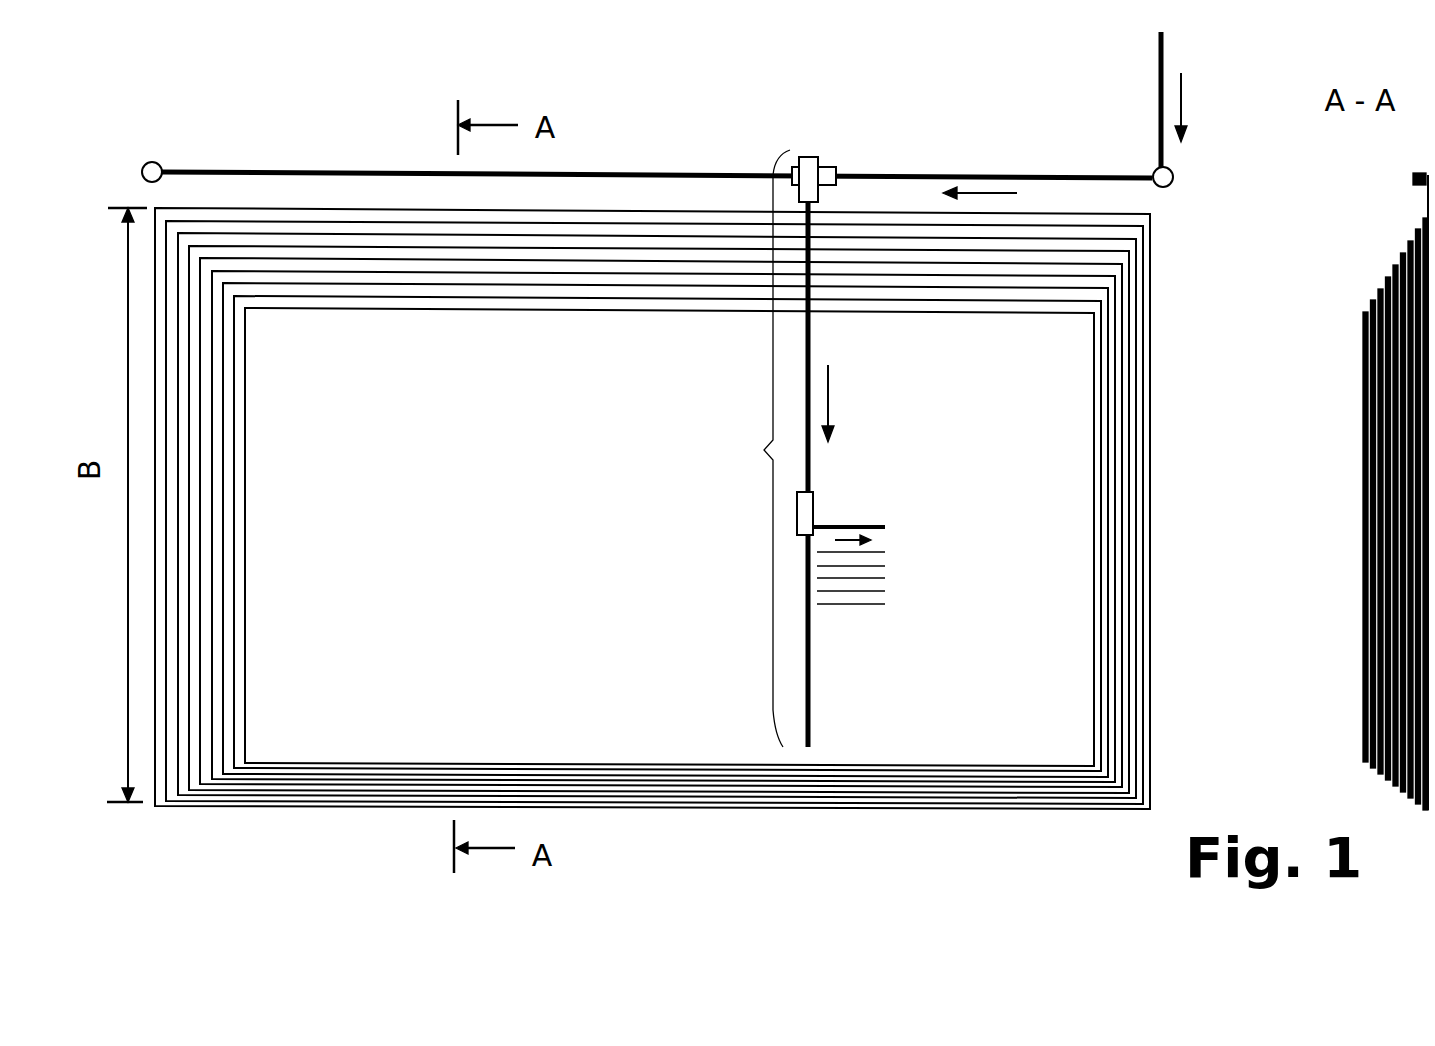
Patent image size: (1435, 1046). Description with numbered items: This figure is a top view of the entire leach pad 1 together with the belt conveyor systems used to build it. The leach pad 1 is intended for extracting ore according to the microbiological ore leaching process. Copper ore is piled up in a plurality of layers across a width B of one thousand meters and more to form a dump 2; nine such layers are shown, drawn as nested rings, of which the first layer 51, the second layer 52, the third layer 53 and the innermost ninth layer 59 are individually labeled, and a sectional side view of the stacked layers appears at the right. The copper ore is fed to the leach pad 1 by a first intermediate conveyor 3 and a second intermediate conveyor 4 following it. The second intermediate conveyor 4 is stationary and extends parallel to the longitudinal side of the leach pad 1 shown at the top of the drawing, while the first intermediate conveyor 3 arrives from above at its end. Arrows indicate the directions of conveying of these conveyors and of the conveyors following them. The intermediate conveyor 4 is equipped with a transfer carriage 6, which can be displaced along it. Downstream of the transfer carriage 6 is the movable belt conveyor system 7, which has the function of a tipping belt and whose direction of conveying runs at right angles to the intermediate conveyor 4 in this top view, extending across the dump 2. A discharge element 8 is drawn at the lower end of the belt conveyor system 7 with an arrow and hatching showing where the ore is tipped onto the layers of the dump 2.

The leach pad 1 is at (791, 534).
The dump 2 is at (399, 540).
The first intermediate conveyor 3 is at (1158, 82).
The second intermediate conveyor 4 is at (907, 175).
The first layer 51 is at (1152, 222).
The second layer 52 is at (1150, 233).
The third layer 53 is at (1147, 245).
The ninth layer 59 is at (1082, 443).
The transfer carriage 6 is at (826, 172).
The movable belt conveyor system 7 is at (772, 448).
The outlet valve / nozzle 8 is at (805, 513).